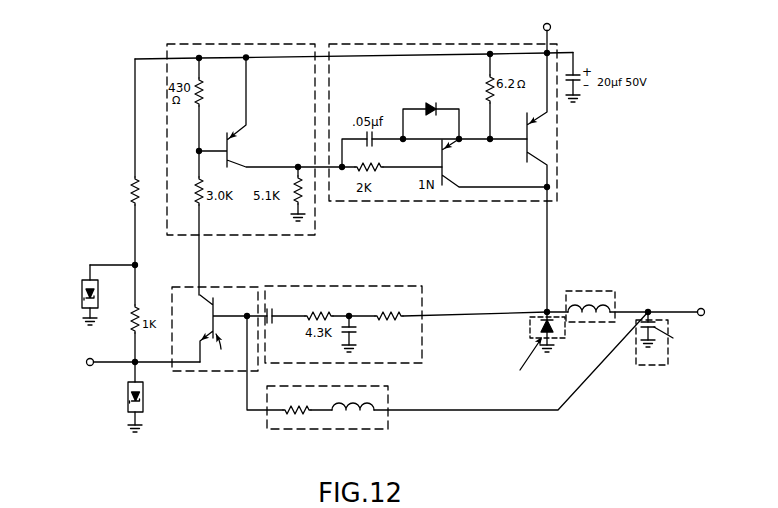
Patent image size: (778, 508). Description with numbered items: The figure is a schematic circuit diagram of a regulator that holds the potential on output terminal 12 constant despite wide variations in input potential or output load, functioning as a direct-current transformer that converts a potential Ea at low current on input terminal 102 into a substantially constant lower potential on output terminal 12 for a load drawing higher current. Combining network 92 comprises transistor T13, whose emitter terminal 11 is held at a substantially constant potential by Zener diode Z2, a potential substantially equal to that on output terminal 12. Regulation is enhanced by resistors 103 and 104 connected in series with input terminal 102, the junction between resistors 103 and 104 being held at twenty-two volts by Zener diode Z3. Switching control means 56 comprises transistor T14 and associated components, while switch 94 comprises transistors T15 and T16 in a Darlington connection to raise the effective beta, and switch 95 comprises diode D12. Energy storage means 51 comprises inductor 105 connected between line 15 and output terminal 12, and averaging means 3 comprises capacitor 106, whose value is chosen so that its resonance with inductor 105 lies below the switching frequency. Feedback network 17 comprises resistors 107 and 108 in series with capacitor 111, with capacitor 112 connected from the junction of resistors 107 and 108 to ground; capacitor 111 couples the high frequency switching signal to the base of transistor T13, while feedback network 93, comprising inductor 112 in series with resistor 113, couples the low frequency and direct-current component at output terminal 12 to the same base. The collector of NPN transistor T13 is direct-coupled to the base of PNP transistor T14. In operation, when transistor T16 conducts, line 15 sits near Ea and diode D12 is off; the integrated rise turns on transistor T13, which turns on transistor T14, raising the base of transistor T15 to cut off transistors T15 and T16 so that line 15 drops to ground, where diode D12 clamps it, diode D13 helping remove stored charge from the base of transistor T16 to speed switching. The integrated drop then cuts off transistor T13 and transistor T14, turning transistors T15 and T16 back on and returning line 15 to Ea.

The switching control means 56 is at (222, 43).
The switch 94 is at (405, 43).
The input terminal 102 is at (541, 27).
The resistor 104 is at (131, 192).
The resistor 103 is at (138, 300).
The combining network 92 is at (228, 288).
The resistor 108 is at (333, 306).
The feedback network 17 is at (382, 287).
The resistor 107 is at (401, 313).
The line 15 is at (553, 308).
The energy storage means 51 is at (614, 293).
The inductor 105 is at (611, 309).
The output terminal 12 is at (705, 314).
The emitter terminal 11 is at (86, 362).
The capacitor / inductor 112 is at (344, 334).
The resistor 113 is at (297, 410).
The feedback network 93 is at (393, 430).
The switch 95 is at (528, 340).
The capacitor 106 is at (638, 335).
The capacitor network 3 is at (651, 356).
The capacitor 111 is at (291, 318).
The transistor T13 is at (221, 330).
The transistor T14 is at (270, 113).
The transistor T15 is at (494, 163).
The transistor T16 is at (568, 182).
The Zener diode Z2 is at (127, 400).
The Zener diode Z3 is at (81, 310).
The diode D12 is at (524, 349).
The diode D13 is at (431, 102).